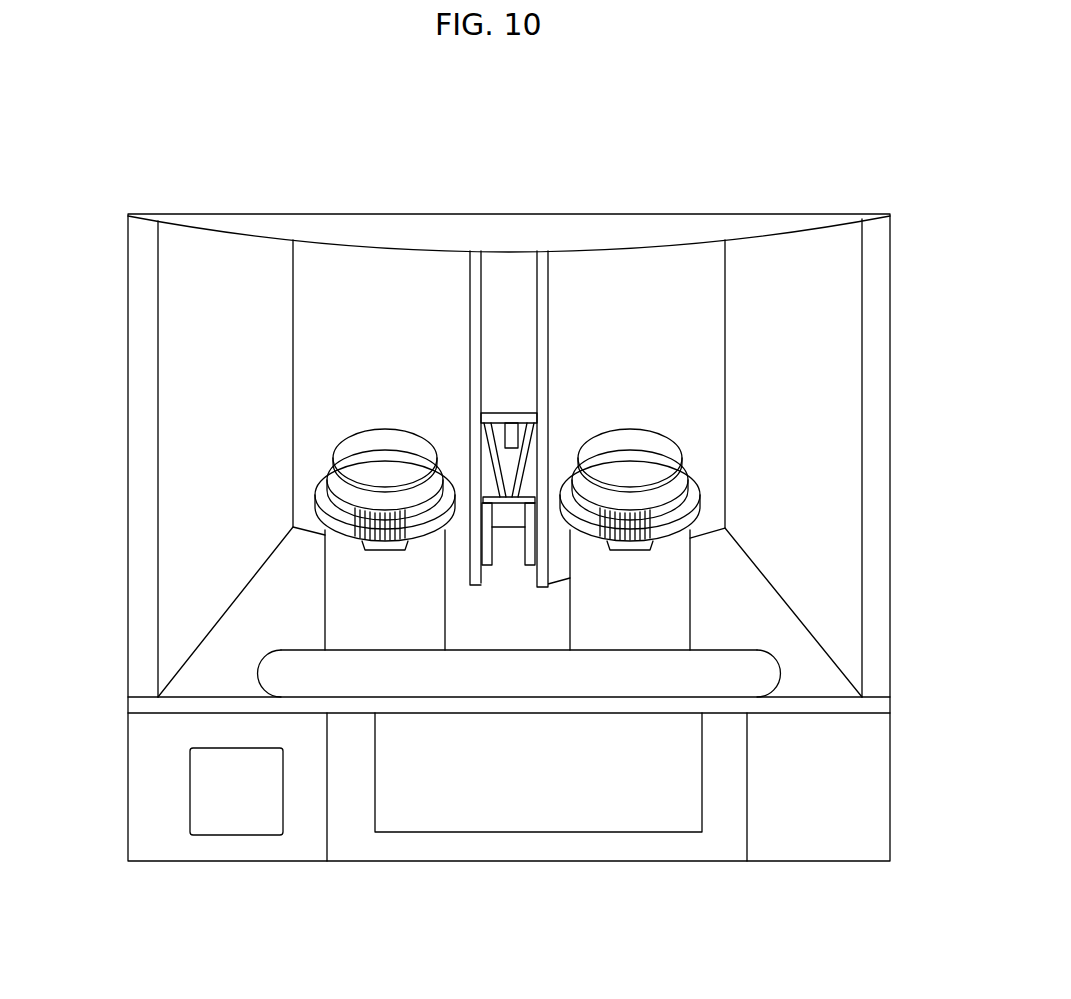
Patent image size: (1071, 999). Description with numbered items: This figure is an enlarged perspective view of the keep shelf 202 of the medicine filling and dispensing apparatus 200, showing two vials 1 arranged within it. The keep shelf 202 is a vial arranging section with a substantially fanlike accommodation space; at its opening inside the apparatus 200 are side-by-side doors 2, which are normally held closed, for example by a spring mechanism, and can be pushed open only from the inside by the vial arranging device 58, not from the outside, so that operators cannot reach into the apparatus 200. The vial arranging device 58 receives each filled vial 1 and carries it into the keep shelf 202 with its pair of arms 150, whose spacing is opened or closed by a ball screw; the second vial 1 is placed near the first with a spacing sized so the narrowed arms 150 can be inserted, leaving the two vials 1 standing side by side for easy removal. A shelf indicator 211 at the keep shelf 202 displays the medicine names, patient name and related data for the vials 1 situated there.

The medicine filling and dispensing apparatus 200 is at (822, 167).
The keep shelf 202 is at (231, 500).
The doors 2 is at (399, 278).
The vial arranging device 58 is at (512, 413).
The arms 150 is at (522, 548).
The vial 1 is at (352, 614).
The shelf indicator 211 is at (560, 816).